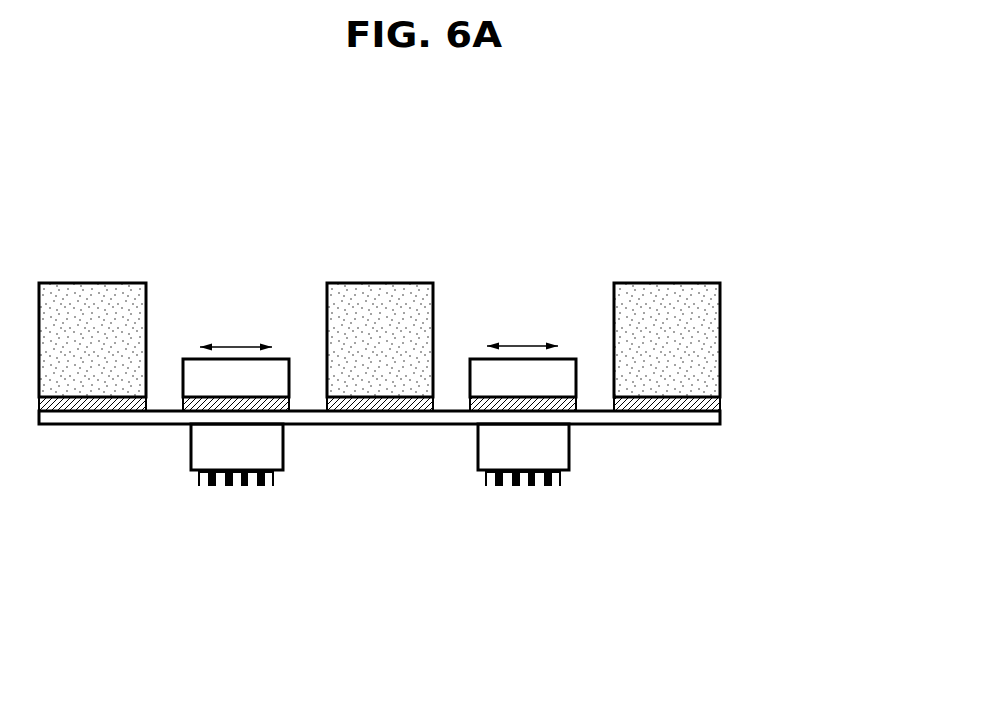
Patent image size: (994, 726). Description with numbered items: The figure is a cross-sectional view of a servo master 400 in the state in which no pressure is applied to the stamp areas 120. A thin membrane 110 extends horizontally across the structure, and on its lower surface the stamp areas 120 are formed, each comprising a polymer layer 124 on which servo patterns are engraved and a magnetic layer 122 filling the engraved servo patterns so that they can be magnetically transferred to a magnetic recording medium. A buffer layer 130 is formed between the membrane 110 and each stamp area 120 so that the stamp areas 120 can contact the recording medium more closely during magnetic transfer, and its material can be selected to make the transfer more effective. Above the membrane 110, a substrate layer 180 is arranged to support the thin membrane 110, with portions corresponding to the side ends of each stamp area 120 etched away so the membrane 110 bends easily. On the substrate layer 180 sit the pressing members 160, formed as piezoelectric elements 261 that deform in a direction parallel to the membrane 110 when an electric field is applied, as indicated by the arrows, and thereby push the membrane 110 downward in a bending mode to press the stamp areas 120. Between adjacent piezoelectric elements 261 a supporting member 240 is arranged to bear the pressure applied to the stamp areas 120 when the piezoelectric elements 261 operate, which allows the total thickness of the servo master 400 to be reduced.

The membrane 110 is at (715, 417).
The substrate layer 180 is at (718, 405).
The supporting member 240 is at (660, 292).
The piezoelectric element 261 is at (535, 368).
The pressing member 160 is at (488, 318).
The buffer layer 130 is at (193, 448).
The stamp area 120 is at (361, 535).
The polymer layer 124 is at (202, 478).
The magnetic layer 122 is at (212, 486).
The servo master 400 is at (748, 242).